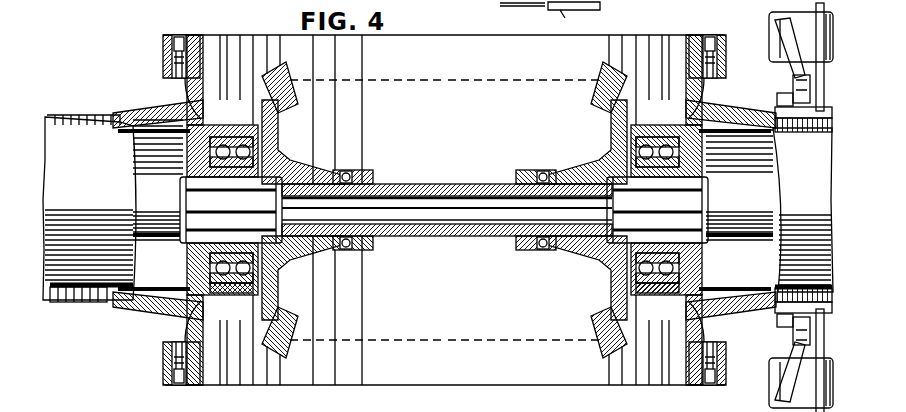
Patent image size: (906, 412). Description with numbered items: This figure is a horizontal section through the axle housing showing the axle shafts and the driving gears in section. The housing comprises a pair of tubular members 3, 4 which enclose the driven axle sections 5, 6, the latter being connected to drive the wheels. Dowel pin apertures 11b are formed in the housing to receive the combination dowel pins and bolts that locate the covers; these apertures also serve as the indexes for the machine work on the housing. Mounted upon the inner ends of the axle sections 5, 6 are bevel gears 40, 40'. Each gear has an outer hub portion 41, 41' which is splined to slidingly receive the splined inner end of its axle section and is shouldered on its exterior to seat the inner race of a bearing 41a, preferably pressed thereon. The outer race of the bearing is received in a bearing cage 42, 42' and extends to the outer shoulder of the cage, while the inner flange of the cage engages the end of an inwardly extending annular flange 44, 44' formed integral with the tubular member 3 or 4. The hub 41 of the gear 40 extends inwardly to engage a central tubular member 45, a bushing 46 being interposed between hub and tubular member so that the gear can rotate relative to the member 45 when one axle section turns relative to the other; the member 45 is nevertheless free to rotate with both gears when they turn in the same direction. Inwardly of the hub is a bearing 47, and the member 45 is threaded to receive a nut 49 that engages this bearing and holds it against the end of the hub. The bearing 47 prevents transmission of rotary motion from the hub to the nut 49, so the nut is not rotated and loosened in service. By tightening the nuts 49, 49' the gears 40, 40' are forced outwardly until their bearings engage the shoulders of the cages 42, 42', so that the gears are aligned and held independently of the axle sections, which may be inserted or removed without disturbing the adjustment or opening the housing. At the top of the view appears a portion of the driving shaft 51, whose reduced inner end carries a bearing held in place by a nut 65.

The dowel pin apertures 11b is at (180, 35).
The tubular member 3 is at (89, 208).
The tubular member 4 is at (803, 210).
The driven axle section 5 is at (207, 181).
The driven axle section 6 is at (690, 186).
The bevel gear 40 is at (585, 210).
The bevel gear 40' is at (303, 210).
The hub portion 41 is at (656, 210).
The hub portion 41' is at (239, 210).
The bearing 41a is at (680, 261).
The bearing cage 42 is at (687, 284).
The bearing cage 42' is at (202, 289).
The annular flange 44 is at (731, 311).
The annular flange 44' is at (161, 311).
The tubular member 45 is at (475, 237).
The bushing 46 is at (555, 249).
The bearing 47 is at (538, 247).
The nut 49 is at (525, 168).
The nut 49' is at (369, 166).
The shaft 51 is at (578, 8).
The nut 65 is at (540, 12).